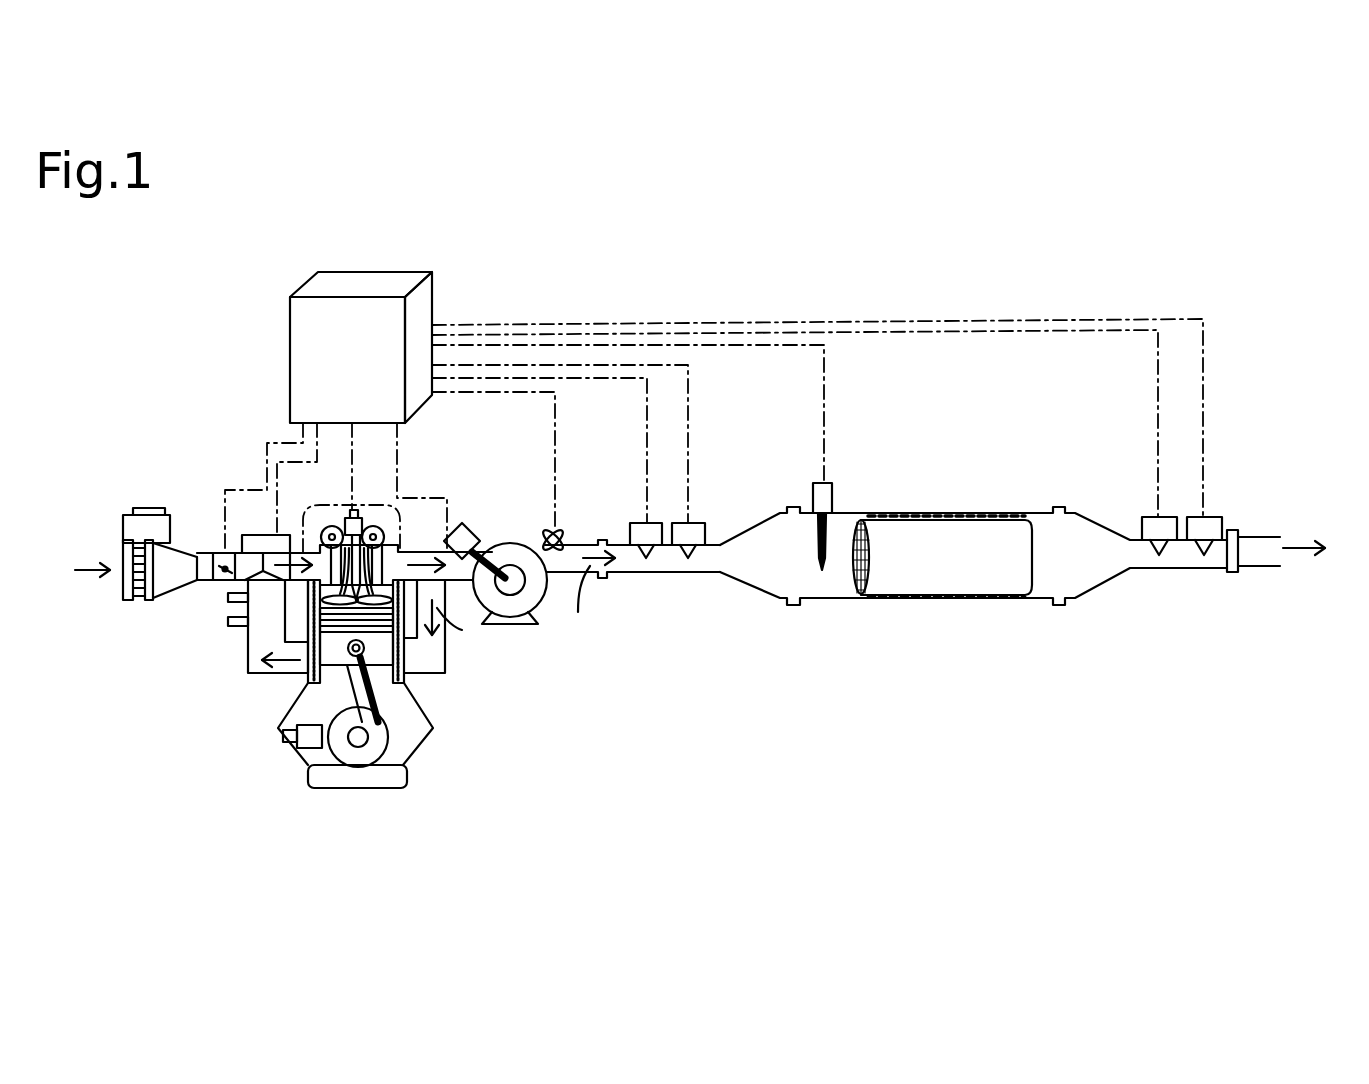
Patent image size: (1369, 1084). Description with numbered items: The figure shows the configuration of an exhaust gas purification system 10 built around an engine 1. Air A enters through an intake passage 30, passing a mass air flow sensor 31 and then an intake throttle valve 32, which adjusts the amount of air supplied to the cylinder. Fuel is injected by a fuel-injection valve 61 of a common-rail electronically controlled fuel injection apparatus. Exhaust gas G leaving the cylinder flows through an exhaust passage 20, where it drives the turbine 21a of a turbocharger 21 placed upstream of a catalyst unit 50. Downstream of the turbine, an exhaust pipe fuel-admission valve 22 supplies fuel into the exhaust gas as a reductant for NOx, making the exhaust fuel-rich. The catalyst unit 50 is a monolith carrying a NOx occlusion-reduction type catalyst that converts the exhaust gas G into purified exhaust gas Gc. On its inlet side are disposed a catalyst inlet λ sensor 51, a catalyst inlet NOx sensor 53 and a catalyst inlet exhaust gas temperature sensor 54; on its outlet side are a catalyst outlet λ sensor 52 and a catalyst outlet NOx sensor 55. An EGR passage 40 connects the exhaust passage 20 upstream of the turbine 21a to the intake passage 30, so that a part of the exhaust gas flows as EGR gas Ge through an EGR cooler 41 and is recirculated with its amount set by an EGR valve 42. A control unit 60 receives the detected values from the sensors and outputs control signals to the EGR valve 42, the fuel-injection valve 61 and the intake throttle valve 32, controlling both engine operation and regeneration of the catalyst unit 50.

The engine 1 is at (345, 790).
The exhaust gas purification system 10 is at (563, 286).
The exhaust passage 20 is at (434, 545).
The turbocharger 21 is at (517, 600).
The turbine 21a is at (507, 556).
The exhaust pipe fuel-admission valve 22 is at (562, 530).
The intake passage 30 is at (207, 553).
The mass air flow sensor 31 is at (167, 588).
The intake throttle valve 32 is at (222, 582).
The EGR passage 40 is at (438, 660).
The EGR cooler 41 is at (265, 612).
The EGR valve 42 is at (262, 535).
The catalyst unit 50 is at (905, 577).
The catalyst inlet λ sensor 51 is at (662, 556).
The catalyst outlet λ sensor 52 is at (1213, 546).
The catalyst inlet NOx sensor 53 is at (705, 556).
The catalyst inlet exhaust gas temperature sensor 54 is at (835, 487).
The catalyst outlet NOx sensor 55 is at (1167, 546).
The control unit 60 is at (357, 371).
The fuel-injection valve 61 is at (362, 508).